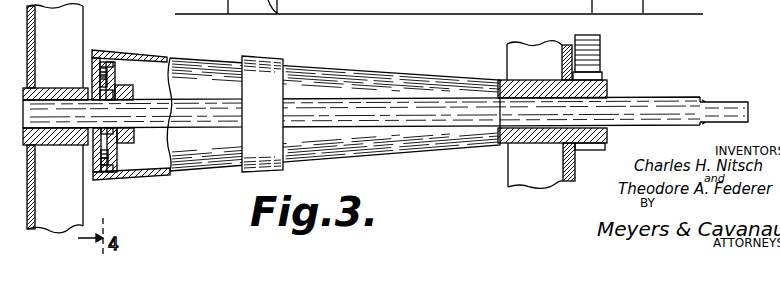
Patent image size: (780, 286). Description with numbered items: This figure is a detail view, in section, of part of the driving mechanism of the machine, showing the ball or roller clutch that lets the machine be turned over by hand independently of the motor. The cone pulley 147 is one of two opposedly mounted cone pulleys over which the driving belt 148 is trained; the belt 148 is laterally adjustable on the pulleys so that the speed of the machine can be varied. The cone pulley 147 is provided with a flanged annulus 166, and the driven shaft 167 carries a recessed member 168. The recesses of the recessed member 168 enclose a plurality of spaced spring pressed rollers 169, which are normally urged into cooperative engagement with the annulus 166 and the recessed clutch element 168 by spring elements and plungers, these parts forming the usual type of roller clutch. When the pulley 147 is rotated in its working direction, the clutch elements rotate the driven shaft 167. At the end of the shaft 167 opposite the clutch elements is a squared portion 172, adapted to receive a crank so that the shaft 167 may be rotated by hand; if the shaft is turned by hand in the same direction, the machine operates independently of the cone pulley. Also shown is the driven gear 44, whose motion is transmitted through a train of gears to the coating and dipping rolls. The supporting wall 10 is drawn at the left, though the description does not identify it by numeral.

The wall 10 is at (72, 31).
The driven gear 44 is at (600, 58).
The cone pulley 147 is at (375, 72).
The driving belt 148 is at (268, 67).
The flanged annulus 166 is at (107, 62).
The driven shaft 167 is at (148, 117).
The recessed member 168 is at (117, 85).
The spring pressed rollers 169 is at (113, 66).
The squared portion 172 is at (725, 108).